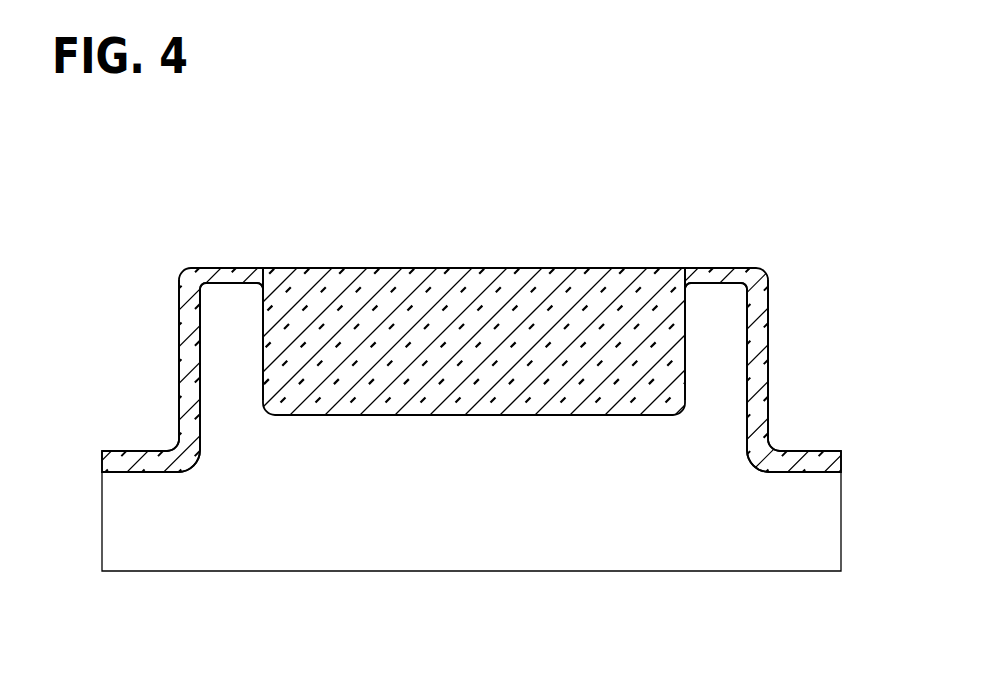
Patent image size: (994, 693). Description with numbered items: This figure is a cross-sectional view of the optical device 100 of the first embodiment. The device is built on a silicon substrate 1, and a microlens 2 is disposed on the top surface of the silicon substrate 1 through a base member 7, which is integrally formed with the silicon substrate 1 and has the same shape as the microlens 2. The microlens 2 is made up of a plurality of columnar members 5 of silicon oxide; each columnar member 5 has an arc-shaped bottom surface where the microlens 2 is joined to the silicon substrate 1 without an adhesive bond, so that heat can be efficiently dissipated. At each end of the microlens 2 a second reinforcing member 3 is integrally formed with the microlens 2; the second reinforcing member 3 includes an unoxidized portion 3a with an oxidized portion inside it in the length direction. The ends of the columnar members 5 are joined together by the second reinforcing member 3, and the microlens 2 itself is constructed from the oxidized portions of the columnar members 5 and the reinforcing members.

The optical device 100 is at (822, 270).
The silicon substrate 1 is at (841, 513).
The microlens 2 is at (372, 259).
The second reinforcing member 3 is at (186, 261).
The unoxidized portion 3a is at (230, 305).
The columnar member 5 is at (458, 300).
The base member 7 is at (768, 433).